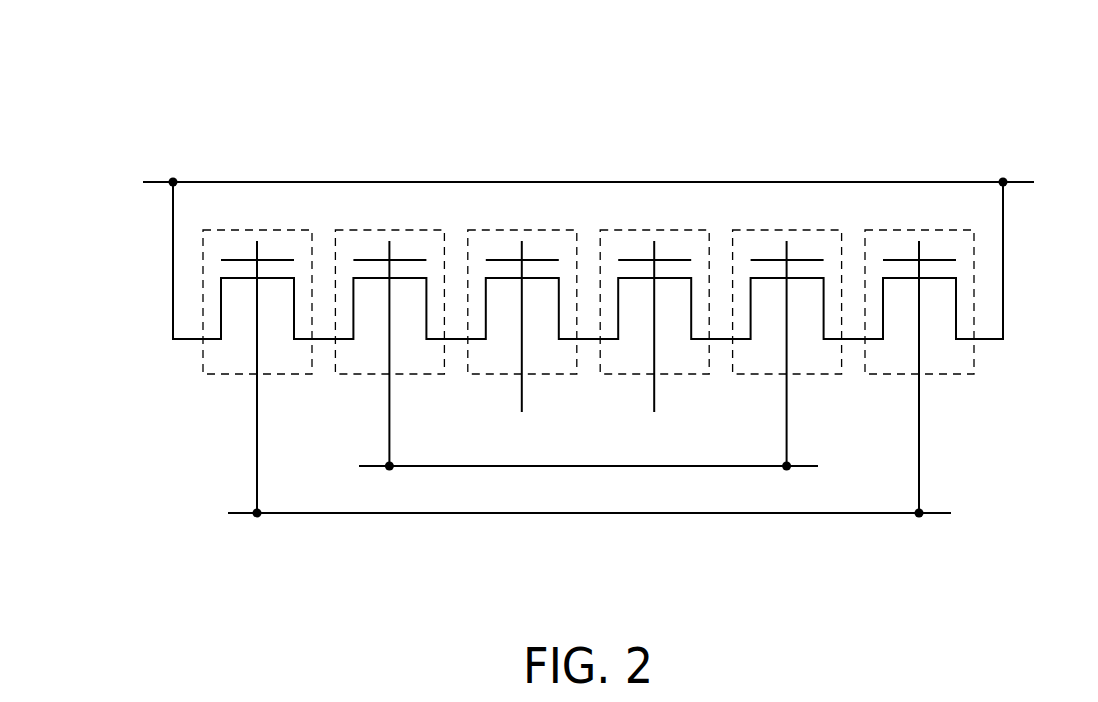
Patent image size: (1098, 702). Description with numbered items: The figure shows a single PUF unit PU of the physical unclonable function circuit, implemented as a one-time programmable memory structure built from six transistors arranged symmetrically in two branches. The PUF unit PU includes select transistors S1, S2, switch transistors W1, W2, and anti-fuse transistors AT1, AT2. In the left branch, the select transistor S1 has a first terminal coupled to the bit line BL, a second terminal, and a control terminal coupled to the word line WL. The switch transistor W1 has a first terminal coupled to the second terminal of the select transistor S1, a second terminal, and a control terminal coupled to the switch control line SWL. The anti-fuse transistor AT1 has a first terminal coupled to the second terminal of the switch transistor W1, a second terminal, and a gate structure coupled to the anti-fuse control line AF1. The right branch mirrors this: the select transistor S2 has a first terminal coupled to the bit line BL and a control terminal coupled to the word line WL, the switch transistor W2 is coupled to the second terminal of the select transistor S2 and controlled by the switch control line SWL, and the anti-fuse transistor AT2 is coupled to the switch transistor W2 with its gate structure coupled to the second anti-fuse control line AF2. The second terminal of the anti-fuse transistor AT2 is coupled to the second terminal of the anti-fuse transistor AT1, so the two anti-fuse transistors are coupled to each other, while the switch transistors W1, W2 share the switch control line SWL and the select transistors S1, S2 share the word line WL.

The PUF unit PU is at (963, 113).
The bit line BL is at (156, 184).
The select transistor S1 is at (222, 378).
The switch transistor W1 is at (354, 378).
The anti-fuse transistor AT1 is at (486, 378).
The anti-fuse control line AF1 is at (523, 344).
The anti-fuse transistor AT2 is at (636, 378).
The second anti-fuse control line AF2 is at (655, 344).
The switch transistor W2 is at (751, 378).
The select transistor S2 is at (885, 378).
The switch control line SWL is at (511, 468).
The word line WL is at (382, 515).